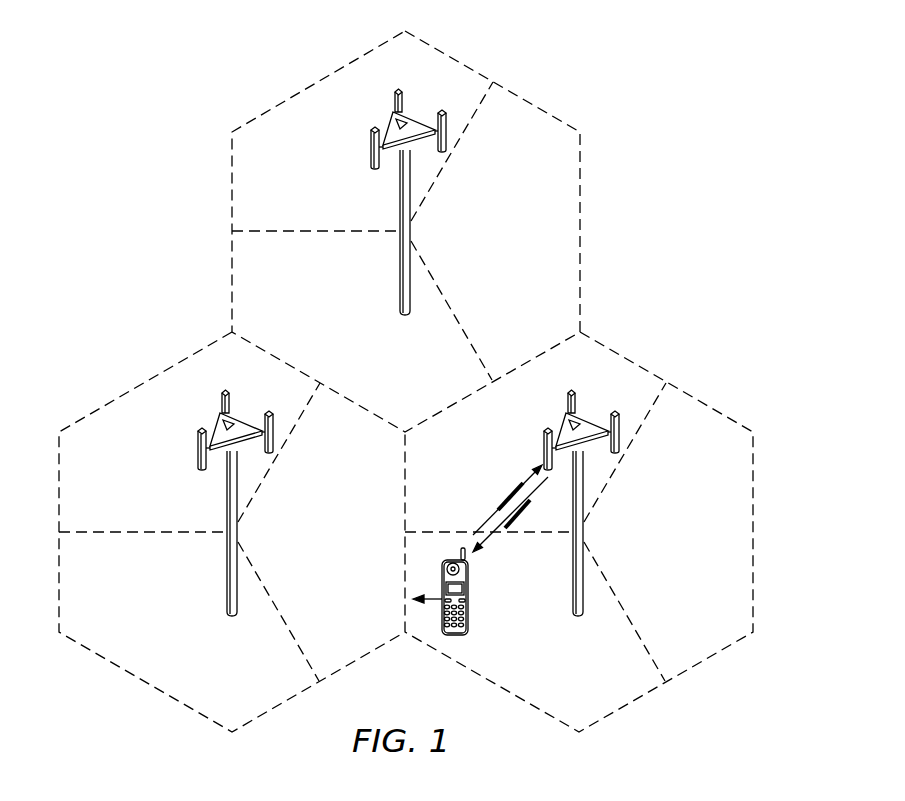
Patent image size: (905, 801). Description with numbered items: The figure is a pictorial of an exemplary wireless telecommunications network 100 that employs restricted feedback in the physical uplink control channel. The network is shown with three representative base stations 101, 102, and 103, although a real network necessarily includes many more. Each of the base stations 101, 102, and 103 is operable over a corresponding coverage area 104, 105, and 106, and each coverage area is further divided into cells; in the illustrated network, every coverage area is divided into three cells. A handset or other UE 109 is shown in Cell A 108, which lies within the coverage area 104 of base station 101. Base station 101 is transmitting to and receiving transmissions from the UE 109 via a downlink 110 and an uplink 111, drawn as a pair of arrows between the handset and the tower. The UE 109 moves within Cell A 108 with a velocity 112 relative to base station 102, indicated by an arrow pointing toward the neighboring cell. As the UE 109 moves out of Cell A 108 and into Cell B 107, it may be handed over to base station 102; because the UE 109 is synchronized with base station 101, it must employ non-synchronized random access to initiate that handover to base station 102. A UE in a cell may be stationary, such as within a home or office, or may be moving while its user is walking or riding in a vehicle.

The wireless telecommunications network 100 is at (646, 90).
The base station 101 is at (584, 535).
The base station 102 is at (226, 505).
The base station 103 is at (400, 203).
The coverage area 104 is at (695, 663).
The coverage area 105 is at (147, 682).
The coverage area 106 is at (580, 230).
The Cell B 107 is at (363, 630).
The Cell A 108 is at (583, 689).
The UE 109 is at (469, 605).
The downlink 110 is at (512, 520).
The uplink 111 is at (513, 487).
The velocity 112 is at (433, 600).